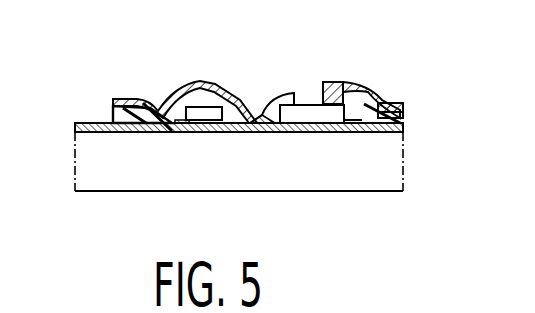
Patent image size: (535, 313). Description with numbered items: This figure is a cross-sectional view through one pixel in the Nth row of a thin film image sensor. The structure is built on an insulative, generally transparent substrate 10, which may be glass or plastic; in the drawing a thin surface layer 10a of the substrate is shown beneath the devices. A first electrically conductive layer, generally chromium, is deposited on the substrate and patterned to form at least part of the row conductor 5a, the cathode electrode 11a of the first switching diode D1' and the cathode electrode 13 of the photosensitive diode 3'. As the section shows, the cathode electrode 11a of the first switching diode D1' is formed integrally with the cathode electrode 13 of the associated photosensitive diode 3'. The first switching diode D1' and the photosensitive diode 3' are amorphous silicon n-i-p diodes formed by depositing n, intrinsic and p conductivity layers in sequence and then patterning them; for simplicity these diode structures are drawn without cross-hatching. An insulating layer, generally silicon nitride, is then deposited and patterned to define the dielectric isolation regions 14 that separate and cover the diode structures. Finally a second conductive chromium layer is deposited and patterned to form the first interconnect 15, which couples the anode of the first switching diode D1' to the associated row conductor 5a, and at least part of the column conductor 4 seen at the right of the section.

The photosensitive diode 3' is at (349, 64).
The column conductor 4 is at (392, 103).
The row conductor 5a is at (85, 123).
The substrate 10 is at (393, 162).
The insulating surface layer 10a is at (252, 126).
The cathode electrode 11a is at (188, 126).
The cathode electrode 13 is at (330, 126).
The dielectric isolation region 14 is at (145, 112).
The first interconnect 15 is at (173, 92).
The first switching diode D1' is at (227, 62).